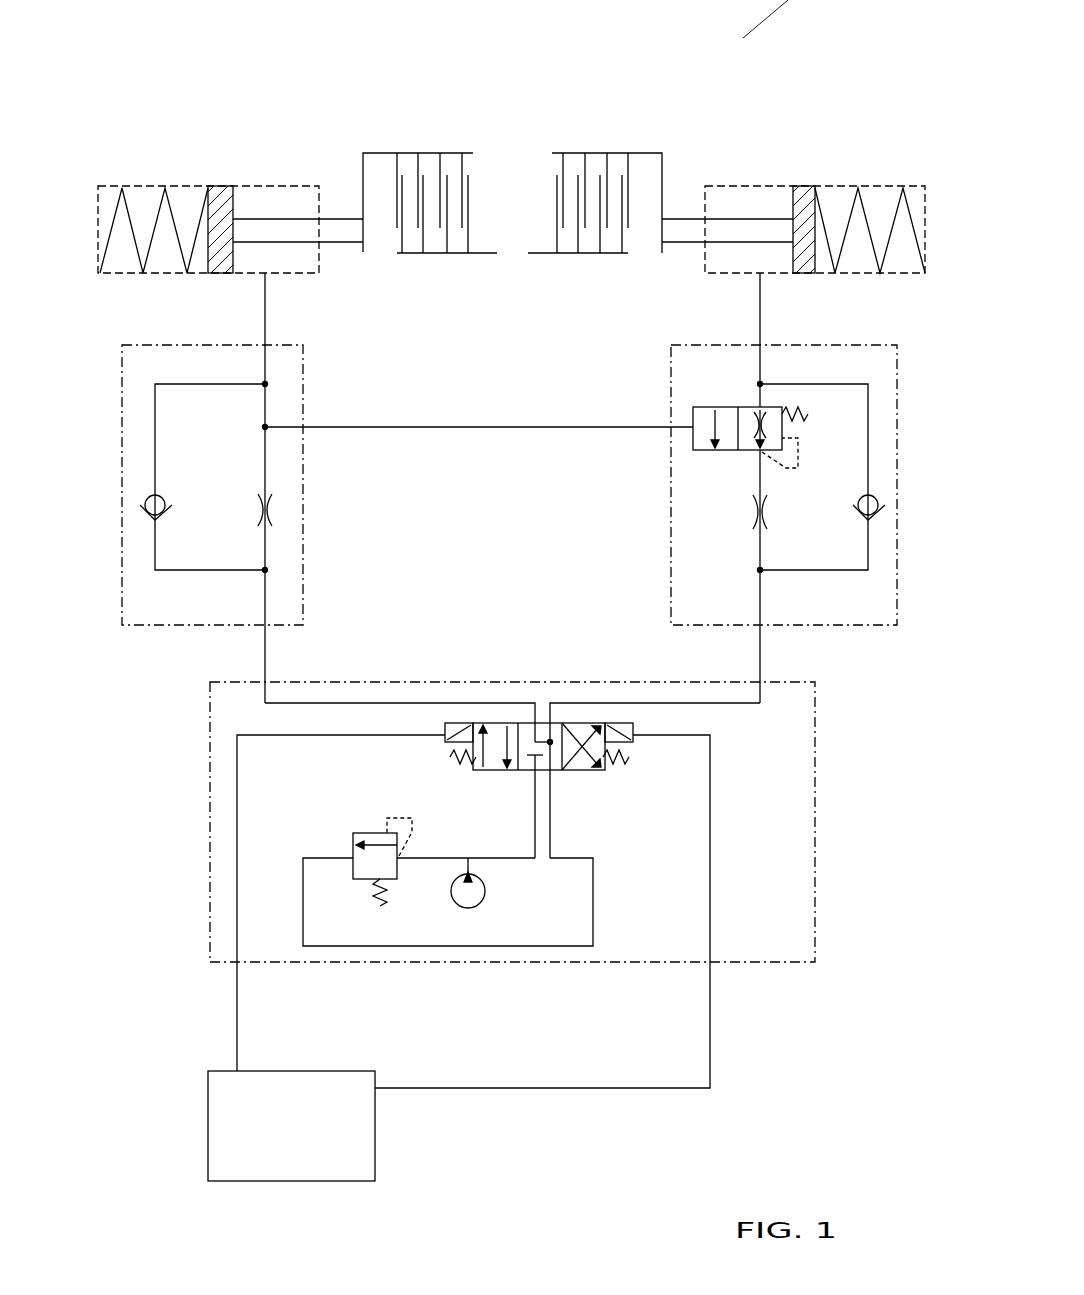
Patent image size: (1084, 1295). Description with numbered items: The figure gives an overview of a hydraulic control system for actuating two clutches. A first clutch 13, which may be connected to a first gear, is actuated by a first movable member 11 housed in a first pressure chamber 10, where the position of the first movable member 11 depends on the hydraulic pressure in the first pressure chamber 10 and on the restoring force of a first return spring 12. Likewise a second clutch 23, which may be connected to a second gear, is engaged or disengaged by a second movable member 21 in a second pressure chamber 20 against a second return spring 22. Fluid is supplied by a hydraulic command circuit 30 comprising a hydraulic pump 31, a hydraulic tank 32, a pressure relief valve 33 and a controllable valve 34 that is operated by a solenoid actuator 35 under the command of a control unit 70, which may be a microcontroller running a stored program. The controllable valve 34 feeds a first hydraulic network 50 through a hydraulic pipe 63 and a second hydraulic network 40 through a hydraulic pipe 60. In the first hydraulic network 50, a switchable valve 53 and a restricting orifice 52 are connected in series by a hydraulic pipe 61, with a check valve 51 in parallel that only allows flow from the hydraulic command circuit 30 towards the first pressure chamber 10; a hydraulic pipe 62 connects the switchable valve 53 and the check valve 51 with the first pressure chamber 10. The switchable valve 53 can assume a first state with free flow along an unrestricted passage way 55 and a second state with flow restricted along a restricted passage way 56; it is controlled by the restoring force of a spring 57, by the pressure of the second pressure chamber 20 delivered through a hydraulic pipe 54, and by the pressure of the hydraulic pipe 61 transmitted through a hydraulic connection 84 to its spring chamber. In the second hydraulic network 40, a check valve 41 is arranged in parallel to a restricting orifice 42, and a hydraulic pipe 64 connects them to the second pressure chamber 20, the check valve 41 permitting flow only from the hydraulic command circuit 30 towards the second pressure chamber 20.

The first pressure chamber 10 is at (755, 200).
The first movable member 11 is at (807, 197).
The first return spring 12 is at (862, 203).
The first clutch 13 is at (598, 142).
The second pressure chamber 20 is at (270, 200).
The second movable member 21 is at (215, 188).
The second return spring 22 is at (123, 203).
The second clutch 23 is at (435, 145).
The hydraulic command circuit 30 is at (555, 885).
The hydraulic pump 31 is at (482, 905).
The hydraulic tank 32 is at (548, 948).
The pressure relief valve 33 is at (360, 825).
The controllable valve 34 is at (578, 790).
The solenoid actuator 35 is at (448, 738).
The second hydraulic network 40 is at (222, 530).
The check valve 41 is at (145, 500).
The restricting orifice 42 is at (273, 505).
The first hydraulic network 50 is at (768, 467).
The check valve 51 is at (880, 497).
The restricting orifice 52 is at (752, 508).
The switchable valve 53 is at (685, 414).
The hydraulic pipe 54 is at (413, 427).
The unrestricted passage way 55 is at (713, 417).
The restricted passage way 56 is at (757, 428).
The spring 57 is at (807, 412).
The hydraulic pipe 60 is at (265, 602).
The hydraulic pipe 61 is at (765, 482).
The hydraulic pipe 62 is at (760, 358).
The hydraulic pipe 63 is at (760, 603).
The hydraulic pipe 64 is at (268, 362).
The control unit 70 is at (353, 1167).
The hydraulic connection 84 is at (800, 452).